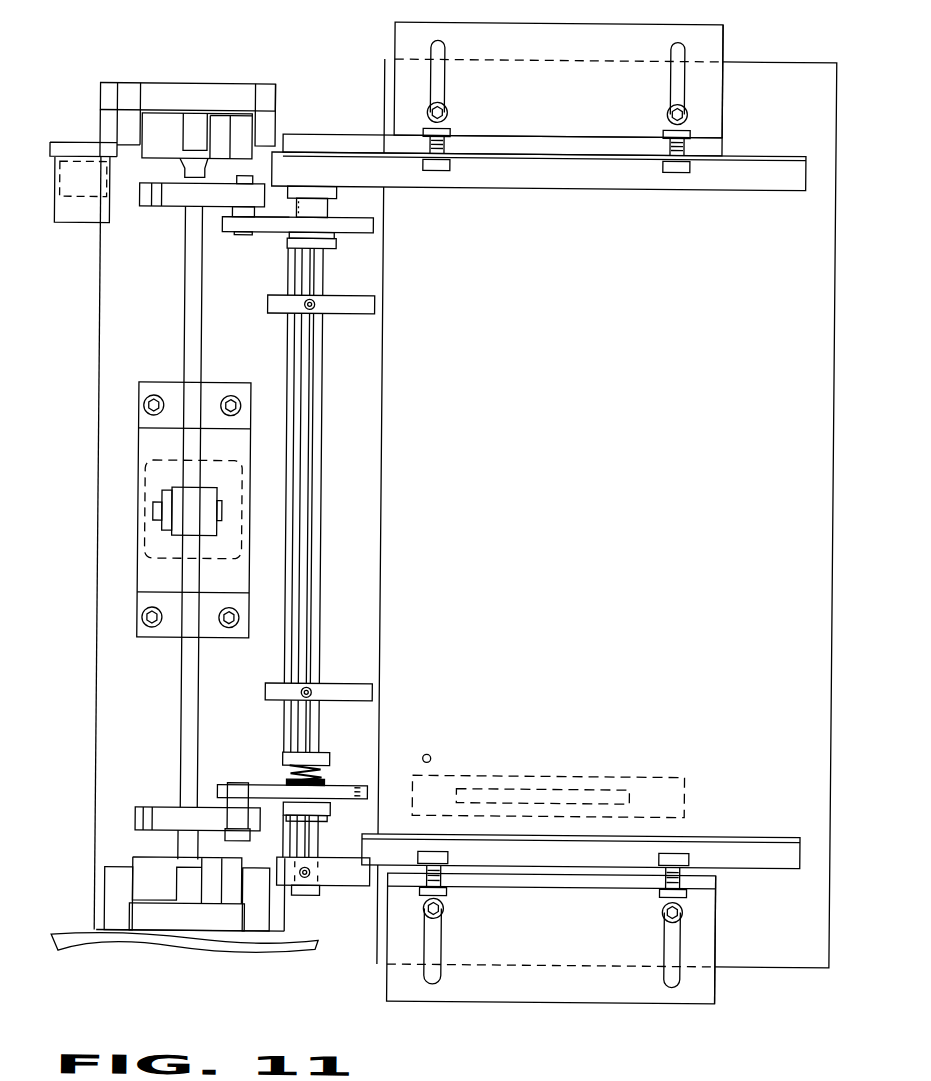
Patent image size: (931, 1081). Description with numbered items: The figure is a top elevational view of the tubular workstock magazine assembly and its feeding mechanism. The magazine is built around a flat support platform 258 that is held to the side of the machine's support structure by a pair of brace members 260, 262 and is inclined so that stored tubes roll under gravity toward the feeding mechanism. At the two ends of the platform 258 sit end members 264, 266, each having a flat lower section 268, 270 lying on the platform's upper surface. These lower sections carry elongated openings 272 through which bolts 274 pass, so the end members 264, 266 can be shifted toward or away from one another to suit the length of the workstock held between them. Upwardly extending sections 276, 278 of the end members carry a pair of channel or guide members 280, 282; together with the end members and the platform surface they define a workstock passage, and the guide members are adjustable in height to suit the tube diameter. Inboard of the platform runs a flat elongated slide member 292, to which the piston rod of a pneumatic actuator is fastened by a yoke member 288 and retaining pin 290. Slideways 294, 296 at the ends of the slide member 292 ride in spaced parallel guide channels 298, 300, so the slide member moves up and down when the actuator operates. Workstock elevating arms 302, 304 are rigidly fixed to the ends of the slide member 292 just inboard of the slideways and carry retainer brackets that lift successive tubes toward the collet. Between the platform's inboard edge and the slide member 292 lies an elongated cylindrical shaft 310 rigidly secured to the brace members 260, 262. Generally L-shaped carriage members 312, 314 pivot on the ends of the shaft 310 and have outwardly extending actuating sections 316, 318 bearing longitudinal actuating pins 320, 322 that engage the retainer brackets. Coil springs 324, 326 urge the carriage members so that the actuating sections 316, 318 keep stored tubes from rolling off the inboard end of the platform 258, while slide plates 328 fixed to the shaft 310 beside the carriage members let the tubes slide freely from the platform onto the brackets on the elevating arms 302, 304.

The support platform 258 is at (845, 50).
The brace member 260 is at (331, 134).
The brace member 262 is at (665, 777).
The end member 264 is at (726, 129).
The end member 266 is at (725, 917).
The flat lower section 268 is at (724, 40).
The flat lower section 270 is at (400, 978).
The elongated opening 272 is at (441, 80).
The bolt 274 is at (450, 109).
The upwardly extending section 276 is at (533, 143).
The upwardly extending section 278 is at (574, 880).
The guide member 280 is at (650, 191).
The guide member 282 is at (760, 811).
The yoke member 288 is at (226, 531).
The retaining pin 290 is at (157, 522).
The slide member 292 is at (185, 331).
The slideway 294 is at (165, 114).
The slideway 296 is at (157, 906).
The guide channel 298 is at (273, 84).
The guide channel 300 is at (210, 937).
The workstock elevating arm 302 is at (171, 212).
The workstock elevating arm 304 is at (139, 818).
The cylindrical shaft 310 is at (328, 499).
The carriage member 312 is at (366, 233).
The carriage member 314 is at (358, 790).
The actuating section 316 is at (273, 234).
The actuating section 318 is at (278, 776).
The actuating pin 320 is at (231, 212).
The actuating pin 322 is at (224, 795).
The coil spring 324 is at (339, 208).
The coil spring 326 is at (330, 779).
The slide plate 328 is at (358, 316).